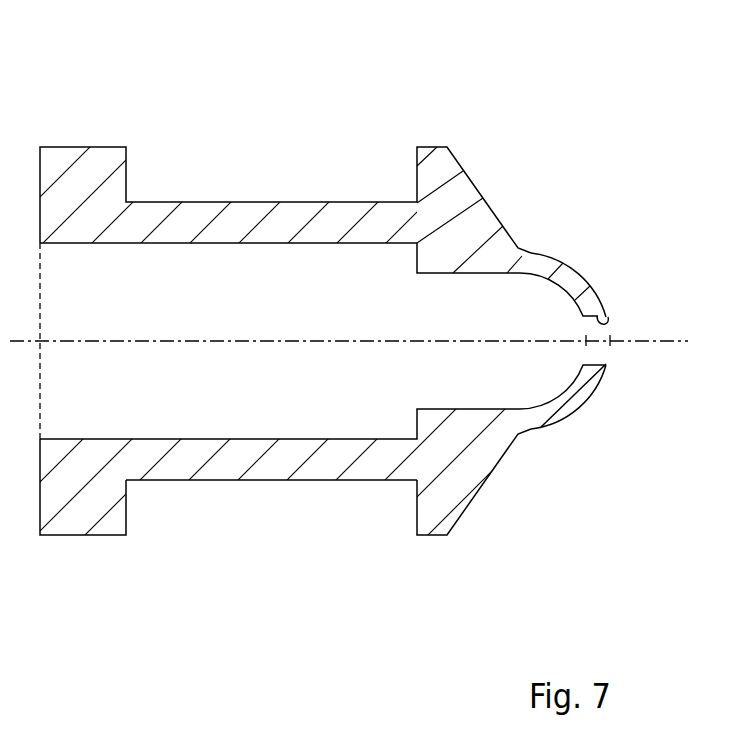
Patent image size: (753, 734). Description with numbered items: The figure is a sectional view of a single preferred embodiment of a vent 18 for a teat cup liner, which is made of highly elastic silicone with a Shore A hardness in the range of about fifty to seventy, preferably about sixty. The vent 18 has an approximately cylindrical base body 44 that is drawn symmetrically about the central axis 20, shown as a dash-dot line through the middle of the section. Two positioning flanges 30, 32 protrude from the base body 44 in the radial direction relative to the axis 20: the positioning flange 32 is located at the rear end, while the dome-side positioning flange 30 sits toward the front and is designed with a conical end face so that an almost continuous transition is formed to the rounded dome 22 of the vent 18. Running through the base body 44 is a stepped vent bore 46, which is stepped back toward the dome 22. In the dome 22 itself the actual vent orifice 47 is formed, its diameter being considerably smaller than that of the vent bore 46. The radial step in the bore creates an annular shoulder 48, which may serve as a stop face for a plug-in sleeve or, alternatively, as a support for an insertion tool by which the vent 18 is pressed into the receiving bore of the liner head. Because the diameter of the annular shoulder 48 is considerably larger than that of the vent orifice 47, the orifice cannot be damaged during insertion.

The vent 18 is at (428, 119).
The axis 20 is at (249, 344).
The rounded dome 22 is at (582, 395).
The dome-side positioning flange 30 is at (435, 510).
The positioning flange 32 is at (78, 507).
The cylindrical base body 44 is at (208, 202).
The stepped vent bore 46 is at (320, 247).
The vent orifice 47 is at (610, 323).
The annular shoulder 48 is at (418, 267).